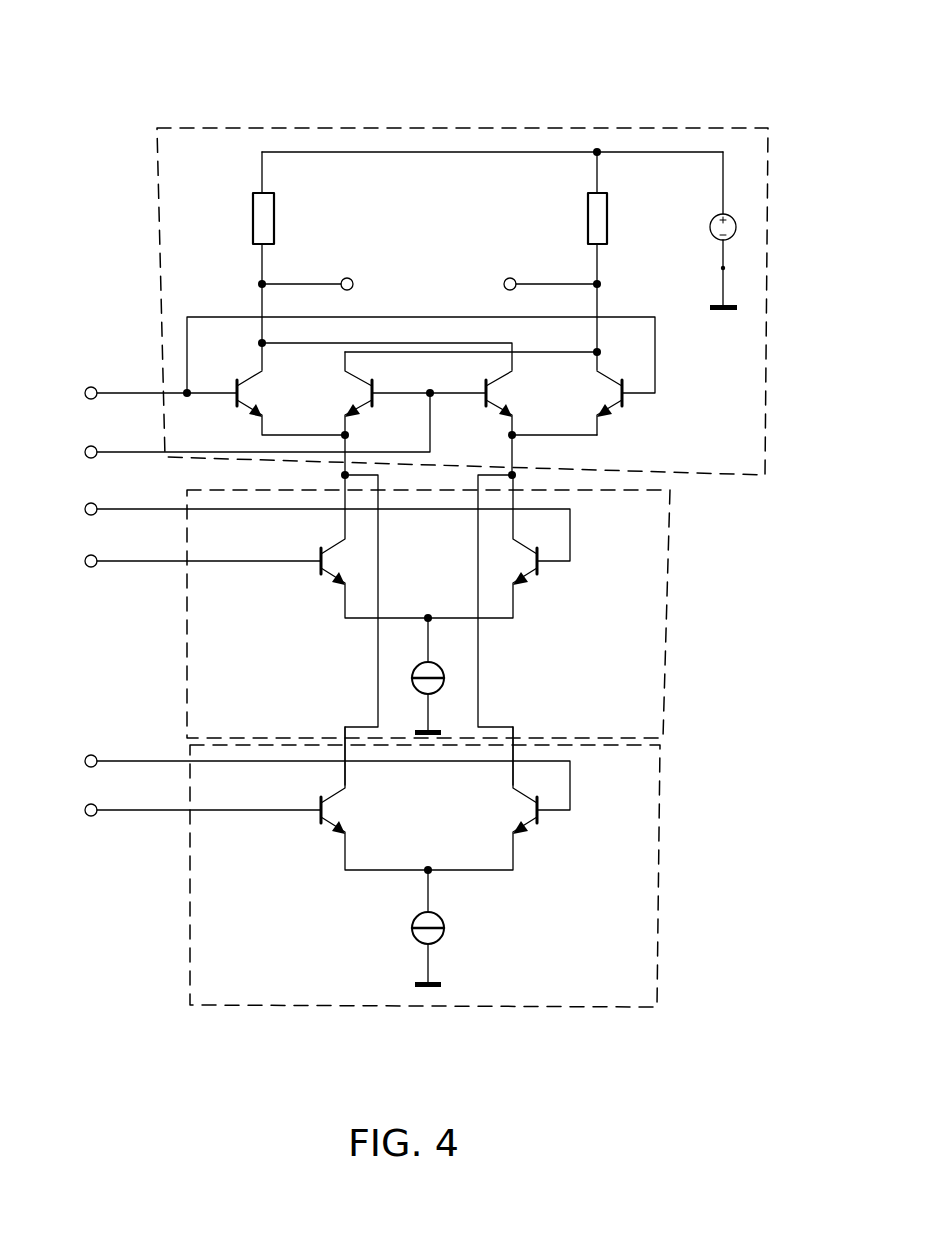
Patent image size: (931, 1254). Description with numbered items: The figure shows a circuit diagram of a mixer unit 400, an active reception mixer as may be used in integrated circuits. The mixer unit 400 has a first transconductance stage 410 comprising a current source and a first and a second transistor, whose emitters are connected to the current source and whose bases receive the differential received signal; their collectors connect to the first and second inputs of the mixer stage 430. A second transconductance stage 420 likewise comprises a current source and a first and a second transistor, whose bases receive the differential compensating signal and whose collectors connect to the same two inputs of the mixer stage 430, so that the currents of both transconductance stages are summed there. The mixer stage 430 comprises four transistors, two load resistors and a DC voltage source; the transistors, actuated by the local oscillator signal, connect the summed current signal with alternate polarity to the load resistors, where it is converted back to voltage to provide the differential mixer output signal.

The mixer unit 400 is at (421, 102).
The first transconductance stage 410 is at (684, 700).
The second transconductance stage 420 is at (670, 965).
The mixer stage 430 is at (776, 447).